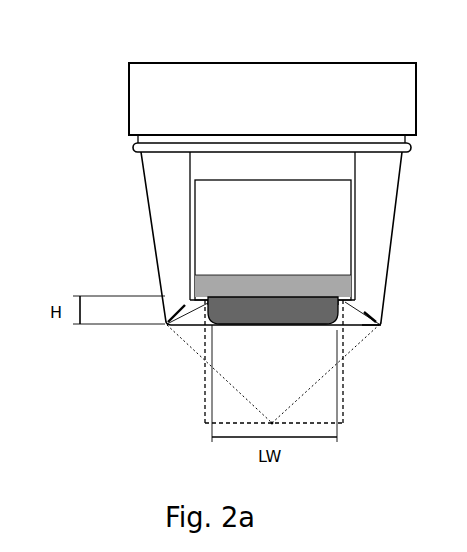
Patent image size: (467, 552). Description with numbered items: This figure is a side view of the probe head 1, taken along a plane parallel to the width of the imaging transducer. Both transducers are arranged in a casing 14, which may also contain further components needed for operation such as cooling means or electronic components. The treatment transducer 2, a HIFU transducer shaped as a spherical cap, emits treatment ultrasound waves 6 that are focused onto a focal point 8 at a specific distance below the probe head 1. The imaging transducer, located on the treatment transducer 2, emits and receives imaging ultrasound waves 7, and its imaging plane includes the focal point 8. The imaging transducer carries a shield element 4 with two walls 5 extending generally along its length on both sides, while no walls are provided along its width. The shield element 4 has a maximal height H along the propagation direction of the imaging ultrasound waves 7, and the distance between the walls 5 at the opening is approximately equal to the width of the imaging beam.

The probe head 1 is at (114, 48).
The treatment transducer 2 is at (166, 322).
The shield element 4 is at (196, 325).
The side walls 5 is at (381, 325).
The treatment ultrasound waves 6 is at (348, 347).
The imaging ultrasound waves 7 is at (207, 380).
The focal point 8 is at (270, 423).
The casing 14 is at (142, 185).